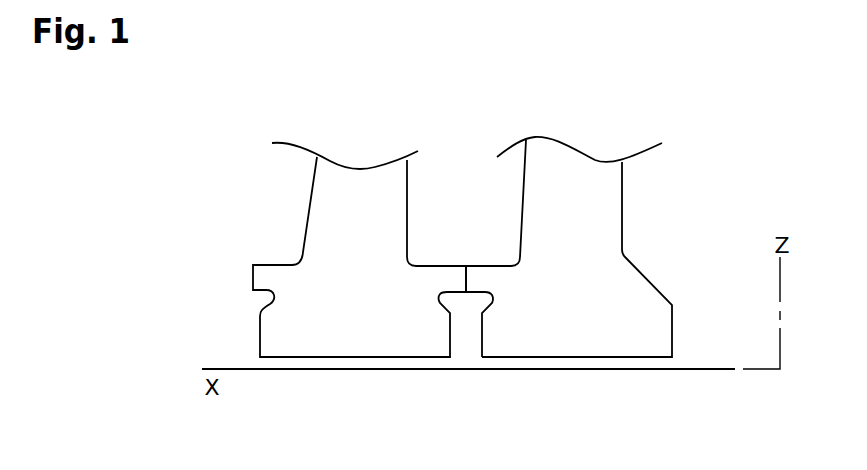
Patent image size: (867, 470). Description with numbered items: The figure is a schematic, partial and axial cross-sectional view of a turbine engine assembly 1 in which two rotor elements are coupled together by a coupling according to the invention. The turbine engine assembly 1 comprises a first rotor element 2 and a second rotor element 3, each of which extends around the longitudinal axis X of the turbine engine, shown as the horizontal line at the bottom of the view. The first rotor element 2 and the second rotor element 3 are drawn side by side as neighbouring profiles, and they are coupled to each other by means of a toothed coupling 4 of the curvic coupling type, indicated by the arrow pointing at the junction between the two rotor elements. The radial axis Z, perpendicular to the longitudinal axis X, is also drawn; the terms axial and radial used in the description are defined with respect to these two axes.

The turbine engine assembly 1 is at (287, 218).
The first rotor element 2 is at (325, 277).
The second rotor element 3 is at (602, 292).
The toothed coupling 4 is at (480, 265).